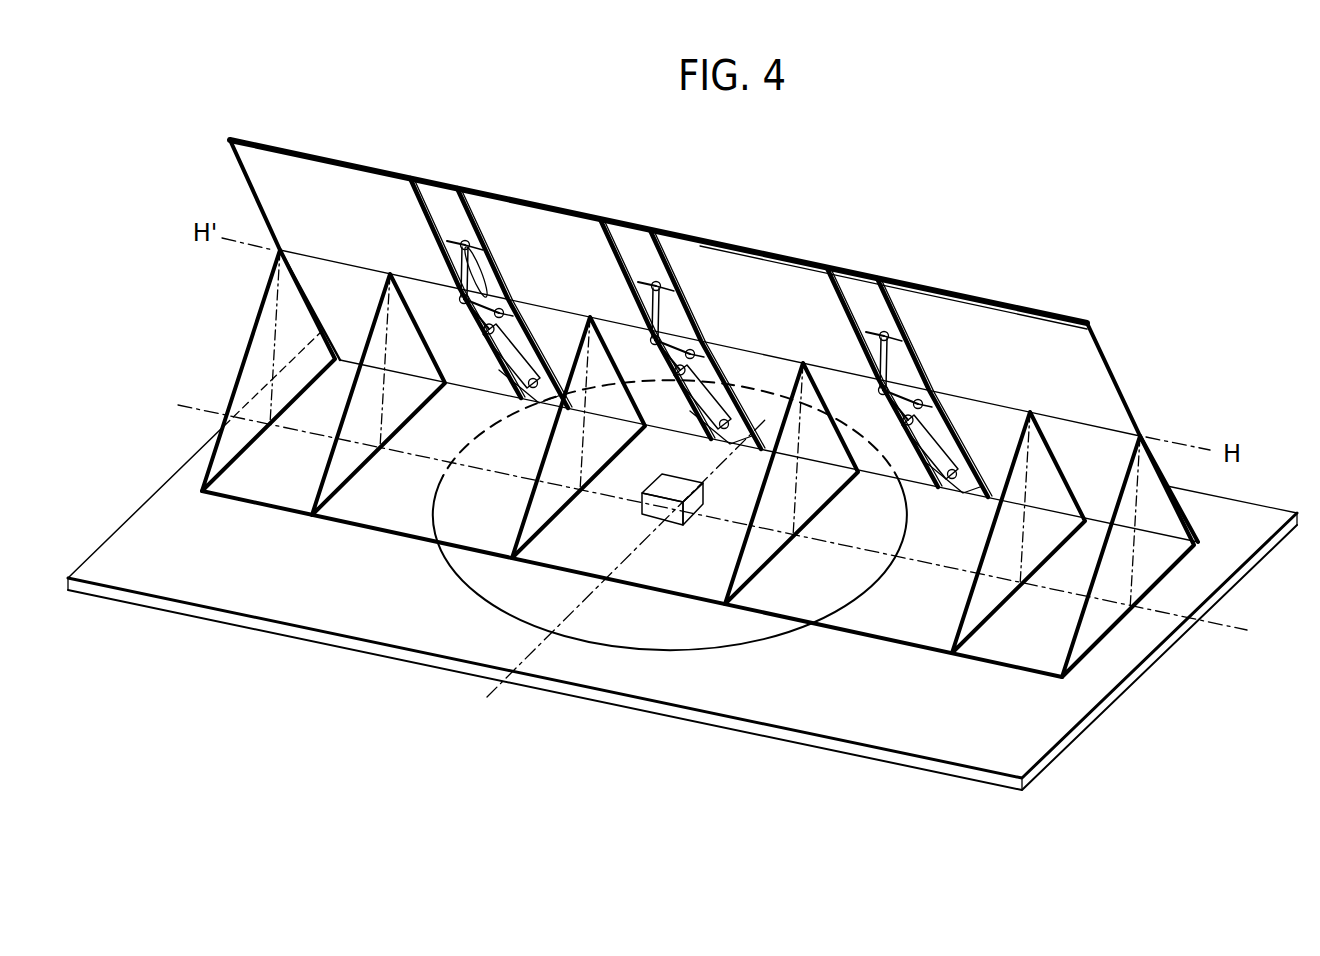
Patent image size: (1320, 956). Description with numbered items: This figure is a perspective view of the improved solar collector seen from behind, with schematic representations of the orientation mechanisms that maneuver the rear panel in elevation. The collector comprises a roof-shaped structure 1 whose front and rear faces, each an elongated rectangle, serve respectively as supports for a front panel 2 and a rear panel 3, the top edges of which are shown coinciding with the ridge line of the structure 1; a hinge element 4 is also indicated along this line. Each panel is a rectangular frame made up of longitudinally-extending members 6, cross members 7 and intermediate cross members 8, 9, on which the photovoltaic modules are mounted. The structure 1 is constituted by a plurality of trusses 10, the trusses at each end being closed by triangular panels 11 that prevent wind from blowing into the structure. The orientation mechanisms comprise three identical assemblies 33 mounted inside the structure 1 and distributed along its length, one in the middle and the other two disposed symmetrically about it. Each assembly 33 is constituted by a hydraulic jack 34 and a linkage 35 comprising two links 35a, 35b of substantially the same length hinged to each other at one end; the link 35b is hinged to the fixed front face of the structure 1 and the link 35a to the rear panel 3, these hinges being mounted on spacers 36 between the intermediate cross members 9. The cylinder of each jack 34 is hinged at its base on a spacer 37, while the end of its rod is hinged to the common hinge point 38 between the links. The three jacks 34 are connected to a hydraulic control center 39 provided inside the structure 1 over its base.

The roof-shaped structure 1 is at (1122, 630).
The front panel 2 is at (1200, 510).
The rear panel 3 is at (1110, 355).
The hinge line 4 is at (1120, 431).
The longitudinally-extending members 6 is at (342, 360).
The cross members 7 is at (247, 178).
The intermediate cross members 8 is at (840, 290).
The intermediate cross members 9 is at (925, 400).
The trusses 10 is at (310, 478).
The triangular panels 11 is at (244, 374).
The assemblies 33 is at (490, 250).
The hydraulic jack 34 is at (932, 455).
The linkage 35 is at (500, 142).
The link 35a is at (465, 245).
The link 35b is at (470, 250).
The spacers 36 is at (658, 287).
The spacer 37 is at (730, 400).
The common hinge point 38 is at (460, 289).
The hydraulic control center 39 is at (670, 516).